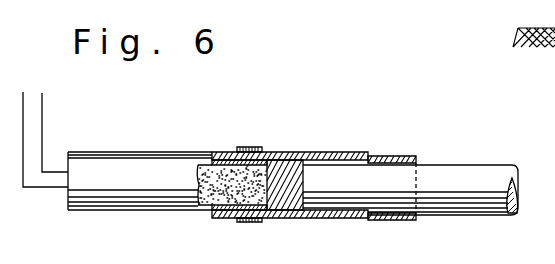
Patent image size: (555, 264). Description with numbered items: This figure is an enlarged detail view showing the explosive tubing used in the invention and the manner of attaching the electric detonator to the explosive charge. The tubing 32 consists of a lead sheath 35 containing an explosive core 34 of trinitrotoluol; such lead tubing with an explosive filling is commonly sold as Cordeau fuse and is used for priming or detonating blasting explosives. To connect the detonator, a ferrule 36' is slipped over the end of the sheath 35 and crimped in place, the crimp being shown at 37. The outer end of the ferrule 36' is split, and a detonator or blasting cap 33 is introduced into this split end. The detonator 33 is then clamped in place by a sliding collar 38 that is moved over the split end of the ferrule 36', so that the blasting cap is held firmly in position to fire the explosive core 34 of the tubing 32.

The tubing 32 is at (475, 163).
The detonator or blasting cap 33 is at (144, 152).
The explosive core 34 is at (518, 193).
The lead sheath 35 is at (448, 216).
The ferrule 36' is at (290, 159).
The crimp 37 is at (369, 155).
The sliding collar 38 is at (245, 147).